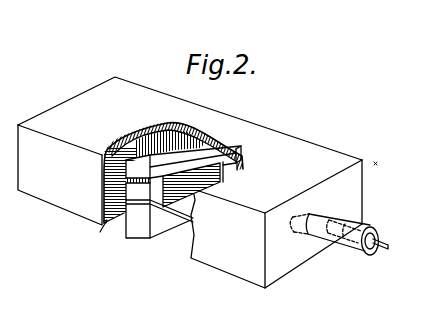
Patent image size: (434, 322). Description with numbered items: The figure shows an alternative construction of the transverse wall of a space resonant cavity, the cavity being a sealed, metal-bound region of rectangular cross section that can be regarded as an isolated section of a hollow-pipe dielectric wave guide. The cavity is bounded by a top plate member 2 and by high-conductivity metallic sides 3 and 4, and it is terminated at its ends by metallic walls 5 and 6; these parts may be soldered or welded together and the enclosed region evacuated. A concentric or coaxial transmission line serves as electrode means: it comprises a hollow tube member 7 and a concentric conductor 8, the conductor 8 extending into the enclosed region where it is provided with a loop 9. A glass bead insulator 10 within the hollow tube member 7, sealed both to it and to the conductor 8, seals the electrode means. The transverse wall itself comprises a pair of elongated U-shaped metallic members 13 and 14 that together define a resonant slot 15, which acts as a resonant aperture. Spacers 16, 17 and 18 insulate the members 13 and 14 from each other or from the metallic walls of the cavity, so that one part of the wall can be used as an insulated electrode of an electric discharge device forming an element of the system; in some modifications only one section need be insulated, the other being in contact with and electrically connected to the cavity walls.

The top plate member 2 is at (305, 144).
The metallic side 3 is at (231, 240).
The metallic side 4 is at (353, 184).
The metallic wall 5 is at (72, 104).
The metallic wall 6 is at (298, 256).
The hollow tube member 7 is at (374, 233).
The concentric conductor 8 is at (382, 251).
The loop 9 is at (291, 222).
The glass bead insulator 10 is at (336, 246).
The elongated U-shaped metallic member 13 is at (167, 217).
The elongated U-shaped metallic member 14 is at (220, 148).
The resonant slot 15 is at (213, 170).
The spacer 16 is at (204, 138).
The spacer 17 is at (140, 230).
The spacer 18 is at (110, 207).